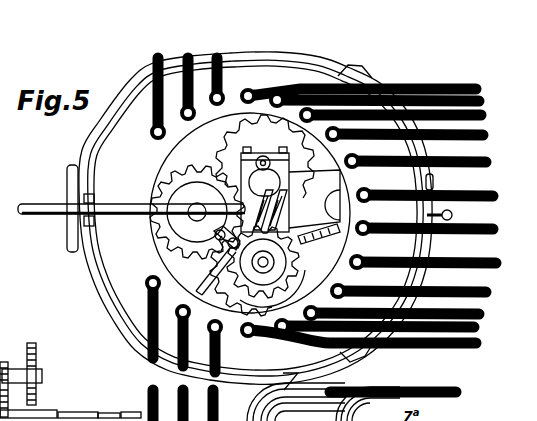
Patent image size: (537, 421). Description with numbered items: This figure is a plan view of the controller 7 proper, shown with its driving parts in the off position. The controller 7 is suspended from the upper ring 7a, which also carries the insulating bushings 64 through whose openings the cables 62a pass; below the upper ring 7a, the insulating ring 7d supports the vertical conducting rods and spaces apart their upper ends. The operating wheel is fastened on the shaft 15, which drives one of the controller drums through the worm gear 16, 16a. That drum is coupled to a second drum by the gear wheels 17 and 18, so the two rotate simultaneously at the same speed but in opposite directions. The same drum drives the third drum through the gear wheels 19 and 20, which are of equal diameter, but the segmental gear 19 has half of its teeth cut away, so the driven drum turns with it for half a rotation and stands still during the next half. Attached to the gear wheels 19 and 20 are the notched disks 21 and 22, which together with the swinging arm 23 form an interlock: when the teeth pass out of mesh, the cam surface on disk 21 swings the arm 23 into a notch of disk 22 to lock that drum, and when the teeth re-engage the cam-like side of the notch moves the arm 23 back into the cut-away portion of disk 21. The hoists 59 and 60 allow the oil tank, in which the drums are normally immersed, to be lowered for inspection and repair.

The controller 7 is at (244, 218).
The upper ring 7a is at (124, 302).
The insulating ring 7d is at (323, 402).
The shaft 15 is at (50, 202).
The worm gear 16 is at (288, 216).
The worm gear 16a is at (287, 248).
The gear wheel 17 is at (250, 213).
The gear wheel 18 is at (265, 156).
The gear wheel 19 is at (236, 285).
The gear wheel 20 is at (162, 239).
The notched disk 21 is at (263, 262).
The notched disk 22 is at (217, 238).
The swinging arm 23 is at (199, 271).
The hoist 59 is at (436, 186).
The hoist 60 is at (68, 232).
The cables 62a is at (474, 232).
The insulating bushing 64 is at (249, 338).